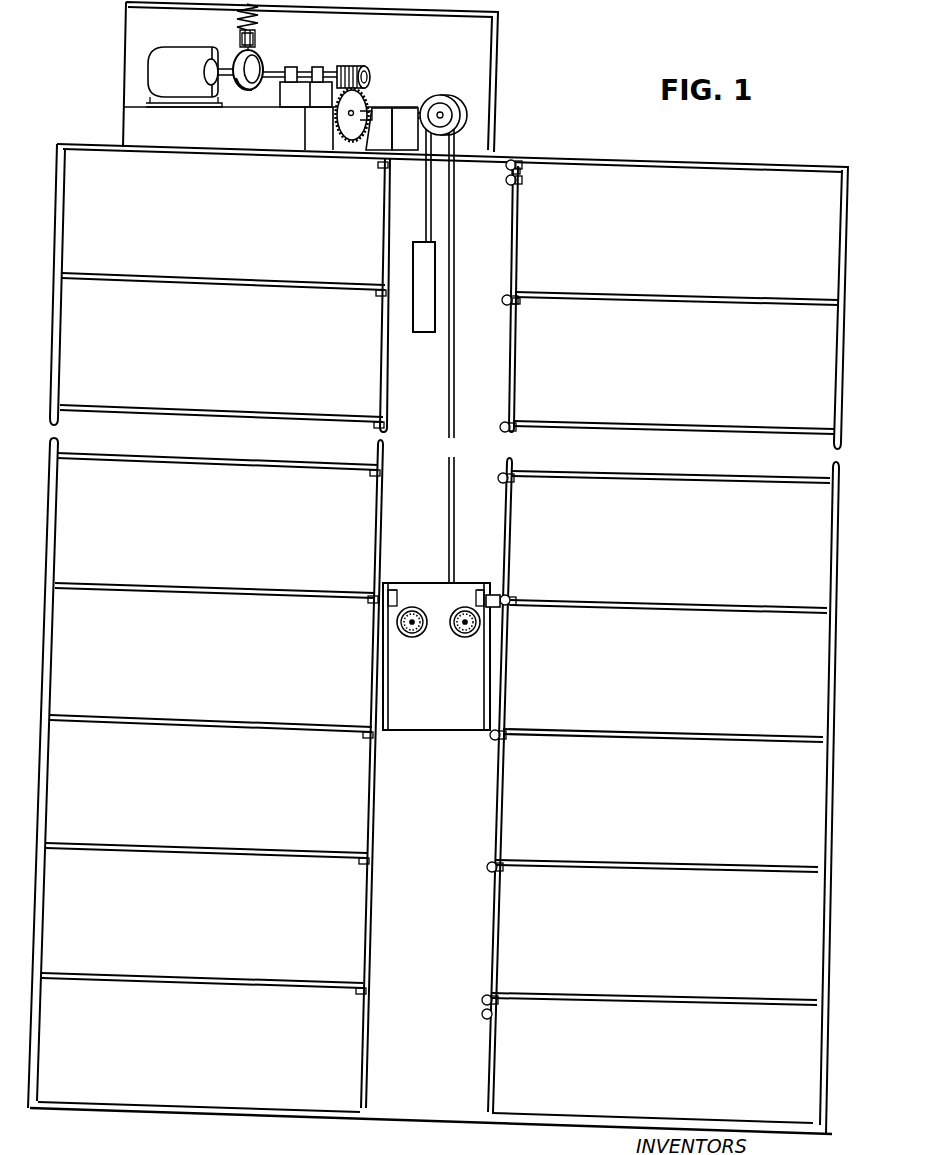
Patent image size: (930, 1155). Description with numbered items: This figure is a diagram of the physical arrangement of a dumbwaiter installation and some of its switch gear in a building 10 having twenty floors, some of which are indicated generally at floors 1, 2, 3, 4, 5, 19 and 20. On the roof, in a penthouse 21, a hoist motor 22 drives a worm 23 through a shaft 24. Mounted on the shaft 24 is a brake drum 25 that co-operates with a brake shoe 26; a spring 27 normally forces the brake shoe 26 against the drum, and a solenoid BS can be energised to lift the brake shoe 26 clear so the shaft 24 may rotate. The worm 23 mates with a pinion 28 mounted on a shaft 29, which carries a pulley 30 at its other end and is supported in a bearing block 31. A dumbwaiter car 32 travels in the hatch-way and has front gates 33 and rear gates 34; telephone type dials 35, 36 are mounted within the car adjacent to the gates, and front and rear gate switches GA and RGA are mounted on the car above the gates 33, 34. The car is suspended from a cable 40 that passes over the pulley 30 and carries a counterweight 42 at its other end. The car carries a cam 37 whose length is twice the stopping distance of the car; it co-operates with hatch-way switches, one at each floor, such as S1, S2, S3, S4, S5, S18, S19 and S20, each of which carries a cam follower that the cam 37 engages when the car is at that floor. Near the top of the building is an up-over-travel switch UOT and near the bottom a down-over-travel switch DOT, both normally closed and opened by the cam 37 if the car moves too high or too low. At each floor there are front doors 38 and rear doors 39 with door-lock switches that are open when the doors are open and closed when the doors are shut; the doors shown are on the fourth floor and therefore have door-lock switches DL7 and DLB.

The floor 1 is at (191, 1104).
The floor 2 is at (227, 984).
The floor 3 is at (244, 853).
The floor 4 is at (252, 725).
The floor 5 is at (271, 590).
The building 10 is at (118, 1124).
The floor 19 is at (324, 415).
The floor 20 is at (324, 284).
The penthouse 21 is at (497, 69).
The hoist motor 22 is at (178, 52).
The worm 23 is at (356, 66).
The shaft 24 is at (297, 74).
The brake drum 25 is at (251, 85).
The brake shoe 26 is at (263, 60).
The spring 27 is at (259, 14).
The pinion 28 is at (363, 104).
The shaft 29 is at (385, 108).
The pulley 30 is at (453, 114).
The bearing block 31 is at (408, 110).
The dumbwaiter car 32 is at (436, 656).
The front gates 33 is at (488, 698).
The rear gates 34 is at (392, 704).
The telephone type dial 35 is at (470, 640).
The telephone type dial 36 is at (417, 640).
The cam 37 is at (501, 591).
The front set of doors 38 is at (504, 667).
The rear set of doors 39 is at (374, 674).
The cable 40 is at (454, 374).
The counterweight 42 is at (419, 333).
The solenoid BS is at (257, 37).
The up-over-travel switch UOT is at (517, 170).
The hatch-way switch S20 is at (516, 187).
The hatch-way switch S19 is at (511, 306).
The hatch-way switch S18 is at (512, 432).
The hatch-way switch S5 is at (509, 484).
The hatch-way switch S4 is at (512, 609).
The hatch-way switch S3 is at (501, 742).
The hatch-way switch S2 is at (501, 872).
The hatch-way switch S1 is at (495, 1002).
The down-over-travel switch DOT is at (492, 1020).
The door-lock switch DLB is at (511, 597).
The front gate switch GA is at (487, 594).
The rear gate switch RGA is at (393, 591).
The door-lock switch DL7 is at (369, 601).